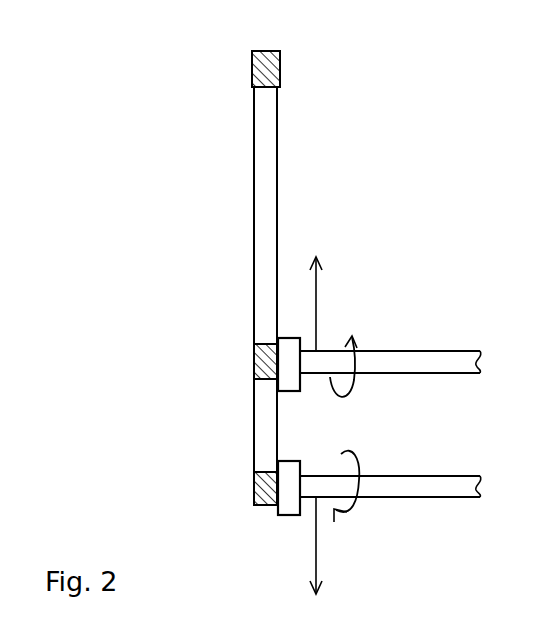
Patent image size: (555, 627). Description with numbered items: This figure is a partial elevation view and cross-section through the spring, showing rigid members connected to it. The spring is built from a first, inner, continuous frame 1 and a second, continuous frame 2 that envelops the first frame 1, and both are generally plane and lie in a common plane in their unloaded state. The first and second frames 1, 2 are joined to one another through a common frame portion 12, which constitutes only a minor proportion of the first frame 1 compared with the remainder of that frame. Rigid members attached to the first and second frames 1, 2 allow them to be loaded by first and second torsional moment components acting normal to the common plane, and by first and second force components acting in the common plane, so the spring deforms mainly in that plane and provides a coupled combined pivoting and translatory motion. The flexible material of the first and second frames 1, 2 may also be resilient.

The first frame 1 is at (295, 333).
The second frame 2 is at (306, 519).
The common frame portion 12 is at (188, 278).